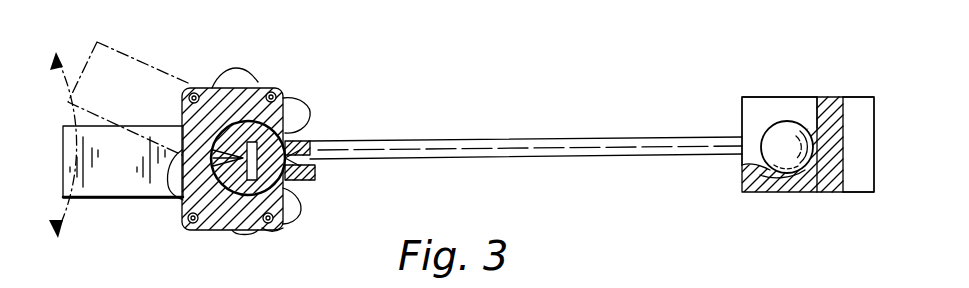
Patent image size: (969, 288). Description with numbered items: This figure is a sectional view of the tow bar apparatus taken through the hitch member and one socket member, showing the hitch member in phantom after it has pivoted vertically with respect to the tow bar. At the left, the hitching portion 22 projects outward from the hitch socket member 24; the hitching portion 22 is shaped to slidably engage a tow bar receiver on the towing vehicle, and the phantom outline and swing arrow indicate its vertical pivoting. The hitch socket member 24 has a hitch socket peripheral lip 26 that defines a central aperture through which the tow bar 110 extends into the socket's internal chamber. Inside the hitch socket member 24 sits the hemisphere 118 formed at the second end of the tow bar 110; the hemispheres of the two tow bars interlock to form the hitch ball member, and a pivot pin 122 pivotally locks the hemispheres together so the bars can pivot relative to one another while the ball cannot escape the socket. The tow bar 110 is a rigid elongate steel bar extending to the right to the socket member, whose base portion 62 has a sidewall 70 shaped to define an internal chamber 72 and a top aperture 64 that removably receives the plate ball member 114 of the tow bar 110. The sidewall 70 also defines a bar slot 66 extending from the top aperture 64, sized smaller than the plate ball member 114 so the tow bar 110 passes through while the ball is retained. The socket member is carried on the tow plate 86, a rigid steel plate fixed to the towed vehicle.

The hitching portion 22 is at (118, 190).
The hitch socket member 24 is at (252, 88).
The hitch socket peripheral lip 26 is at (287, 228).
The hemisphere 118 is at (280, 190).
The pivot pin 122 is at (290, 122).
The tow bar 110 is at (551, 154).
The bar slot 66 is at (739, 166).
The top aperture 64 is at (806, 112).
The sidewall 70 is at (818, 99).
The tow plate 86 is at (870, 118).
The plate ball member 114 is at (785, 136).
The internal chamber 72 is at (777, 168).
The base portion 62 is at (829, 180).